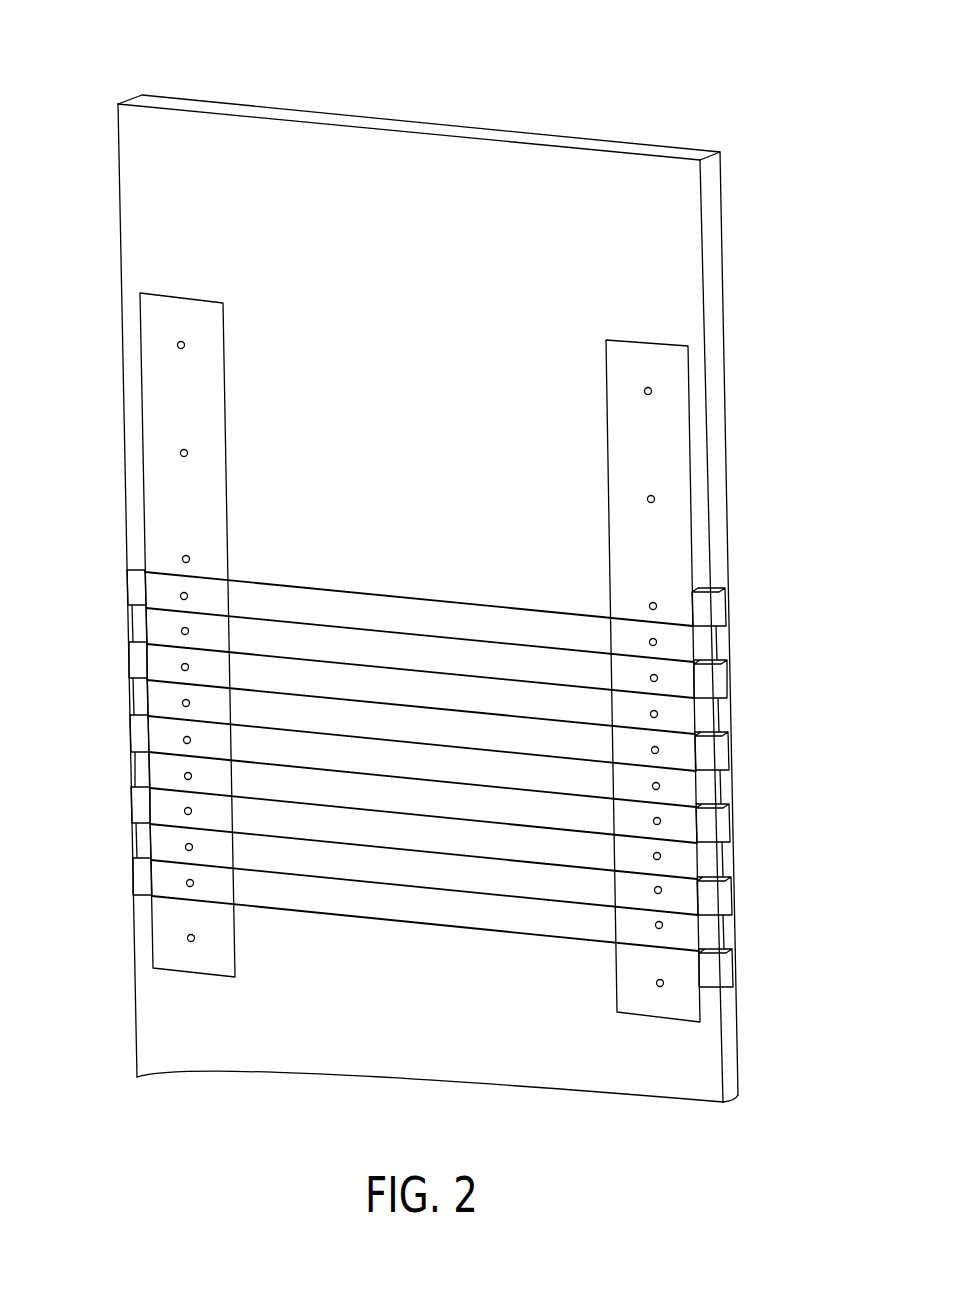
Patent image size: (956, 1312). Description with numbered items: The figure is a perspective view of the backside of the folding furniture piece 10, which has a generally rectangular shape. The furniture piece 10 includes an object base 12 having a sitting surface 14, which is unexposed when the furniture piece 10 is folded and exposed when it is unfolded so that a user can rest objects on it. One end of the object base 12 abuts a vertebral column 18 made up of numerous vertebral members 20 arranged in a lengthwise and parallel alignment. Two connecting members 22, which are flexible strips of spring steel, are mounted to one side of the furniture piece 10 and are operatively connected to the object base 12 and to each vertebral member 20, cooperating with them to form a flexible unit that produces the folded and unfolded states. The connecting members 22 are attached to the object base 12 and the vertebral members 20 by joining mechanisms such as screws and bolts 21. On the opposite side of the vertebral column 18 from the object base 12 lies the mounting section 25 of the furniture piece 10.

The furniture piece 10 is at (529, 96).
The object base 12 is at (722, 218).
The sitting surface 14 is at (140, 195).
The vertebral column 18 is at (110, 574).
The vertebral members 20 is at (462, 693).
The screws and bolts 21 is at (178, 345).
The connecting members 22 is at (172, 487).
The mounting section 25 is at (243, 1050).